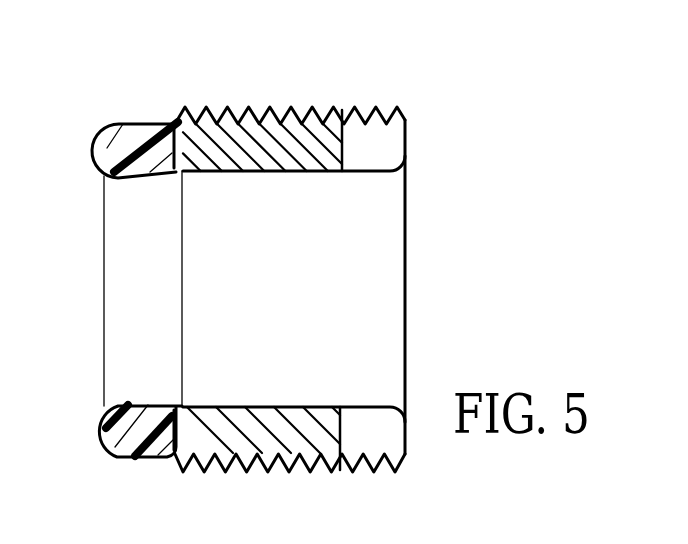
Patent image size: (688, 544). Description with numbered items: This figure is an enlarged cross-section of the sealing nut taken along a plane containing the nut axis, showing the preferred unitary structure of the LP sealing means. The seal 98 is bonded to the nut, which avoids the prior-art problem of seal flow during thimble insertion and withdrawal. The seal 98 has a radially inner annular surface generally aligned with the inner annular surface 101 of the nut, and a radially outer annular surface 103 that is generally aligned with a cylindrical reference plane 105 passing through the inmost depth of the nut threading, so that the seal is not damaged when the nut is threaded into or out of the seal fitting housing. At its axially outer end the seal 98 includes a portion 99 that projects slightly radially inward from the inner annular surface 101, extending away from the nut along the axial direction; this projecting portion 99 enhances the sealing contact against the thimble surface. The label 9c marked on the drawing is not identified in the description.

The seal 98 is at (130, 124).
The portion of the seal 99 is at (165, 176).
The inner annular surface 101 is at (253, 173).
The radially outer annular surface 103 is at (150, 124).
The cylindrical reference plane 105 is at (248, 112).
The nut 9c is at (310, 112).